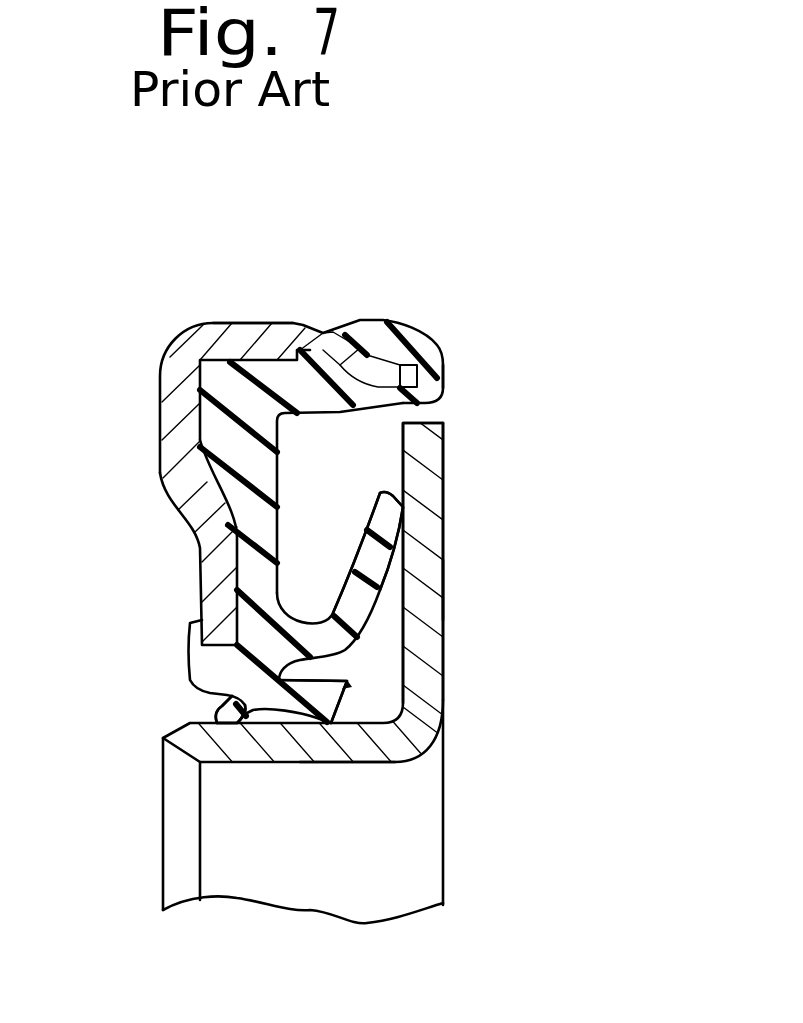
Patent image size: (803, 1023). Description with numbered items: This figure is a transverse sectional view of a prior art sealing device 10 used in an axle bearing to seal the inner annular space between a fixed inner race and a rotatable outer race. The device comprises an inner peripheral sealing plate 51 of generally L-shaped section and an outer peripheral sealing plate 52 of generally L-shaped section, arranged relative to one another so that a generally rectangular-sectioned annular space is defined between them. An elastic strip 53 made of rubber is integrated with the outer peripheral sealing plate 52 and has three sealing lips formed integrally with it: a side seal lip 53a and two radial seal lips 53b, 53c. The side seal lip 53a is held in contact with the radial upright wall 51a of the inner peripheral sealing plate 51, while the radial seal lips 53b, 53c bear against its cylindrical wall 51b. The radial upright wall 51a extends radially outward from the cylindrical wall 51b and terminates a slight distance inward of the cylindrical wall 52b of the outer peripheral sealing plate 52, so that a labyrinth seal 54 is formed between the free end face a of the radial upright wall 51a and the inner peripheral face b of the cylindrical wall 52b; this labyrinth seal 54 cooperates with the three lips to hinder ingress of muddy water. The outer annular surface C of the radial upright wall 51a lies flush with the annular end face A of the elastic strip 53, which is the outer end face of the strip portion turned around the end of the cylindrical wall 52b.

The sealing device 10 is at (613, 571).
The inner peripheral sealing plate 51 is at (258, 770).
The radial upright wall 51a is at (428, 668).
The cylindrical wall 51b is at (343, 760).
The outer peripheral sealing plate 52 is at (195, 352).
The cylindrical wall 52b is at (266, 340).
The elastic strip 53 is at (223, 452).
The side seal lip 53a is at (390, 545).
The radial seal lip 53b is at (333, 704).
The radial seal lip 53c is at (220, 708).
The labyrinth seal 54 is at (407, 415).
The annular end face A is at (443, 367).
The free end face a is at (407, 423).
The inner peripheral face b is at (403, 403).
The outer annular surface C is at (443, 593).